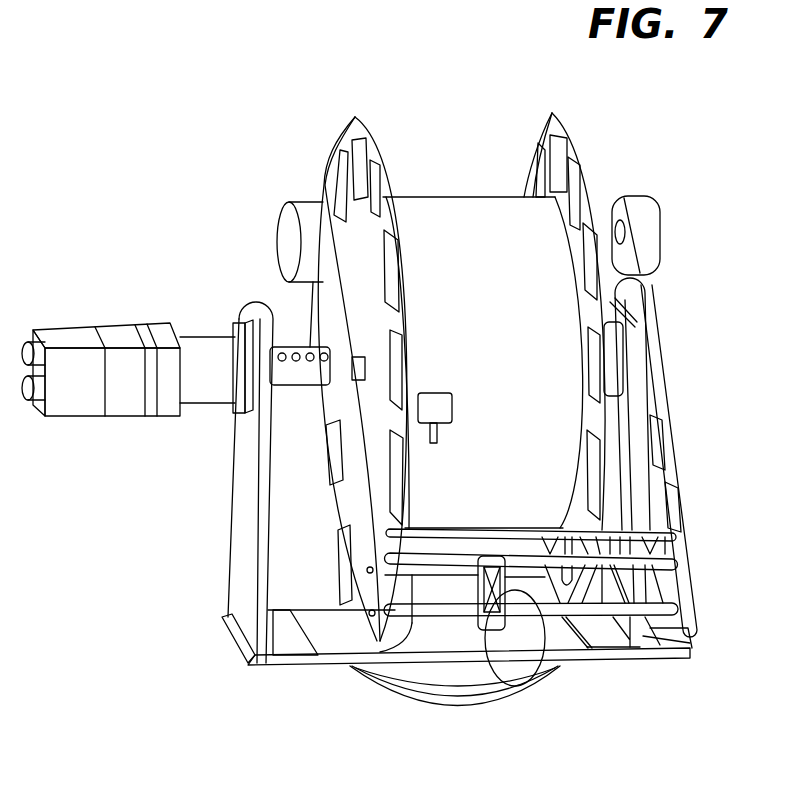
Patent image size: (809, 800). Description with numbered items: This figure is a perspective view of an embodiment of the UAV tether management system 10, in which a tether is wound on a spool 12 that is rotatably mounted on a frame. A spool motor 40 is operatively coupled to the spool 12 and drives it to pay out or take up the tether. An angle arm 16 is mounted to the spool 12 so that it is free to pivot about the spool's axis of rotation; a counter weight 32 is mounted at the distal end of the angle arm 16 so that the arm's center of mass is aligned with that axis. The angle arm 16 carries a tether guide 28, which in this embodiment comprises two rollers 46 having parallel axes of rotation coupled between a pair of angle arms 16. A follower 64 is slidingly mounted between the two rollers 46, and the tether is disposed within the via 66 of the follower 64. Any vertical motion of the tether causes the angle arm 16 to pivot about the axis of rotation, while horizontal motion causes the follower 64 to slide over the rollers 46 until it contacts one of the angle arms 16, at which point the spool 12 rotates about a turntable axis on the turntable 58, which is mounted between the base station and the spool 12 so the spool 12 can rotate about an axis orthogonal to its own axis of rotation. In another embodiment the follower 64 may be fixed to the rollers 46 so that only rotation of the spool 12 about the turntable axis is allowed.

The UAV tether management system 10 is at (124, 158).
The spool 12 is at (560, 130).
The angle arm 16 is at (665, 432).
The tether guide 28 is at (722, 521).
The counter weight 32 is at (647, 217).
The spool motor 40 is at (87, 408).
The rollers 46 is at (351, 666).
The turntable 58 is at (395, 697).
The follower 64 is at (487, 630).
The via 66 is at (537, 686).